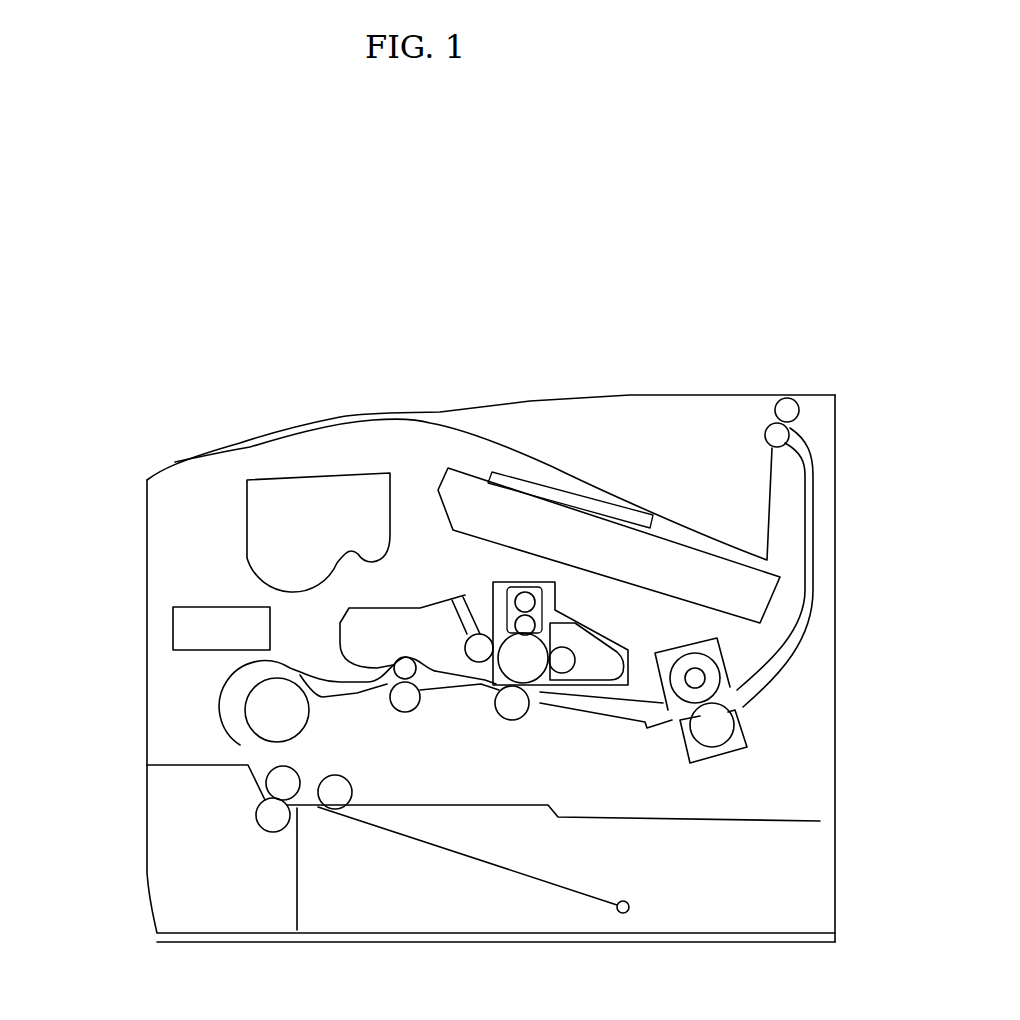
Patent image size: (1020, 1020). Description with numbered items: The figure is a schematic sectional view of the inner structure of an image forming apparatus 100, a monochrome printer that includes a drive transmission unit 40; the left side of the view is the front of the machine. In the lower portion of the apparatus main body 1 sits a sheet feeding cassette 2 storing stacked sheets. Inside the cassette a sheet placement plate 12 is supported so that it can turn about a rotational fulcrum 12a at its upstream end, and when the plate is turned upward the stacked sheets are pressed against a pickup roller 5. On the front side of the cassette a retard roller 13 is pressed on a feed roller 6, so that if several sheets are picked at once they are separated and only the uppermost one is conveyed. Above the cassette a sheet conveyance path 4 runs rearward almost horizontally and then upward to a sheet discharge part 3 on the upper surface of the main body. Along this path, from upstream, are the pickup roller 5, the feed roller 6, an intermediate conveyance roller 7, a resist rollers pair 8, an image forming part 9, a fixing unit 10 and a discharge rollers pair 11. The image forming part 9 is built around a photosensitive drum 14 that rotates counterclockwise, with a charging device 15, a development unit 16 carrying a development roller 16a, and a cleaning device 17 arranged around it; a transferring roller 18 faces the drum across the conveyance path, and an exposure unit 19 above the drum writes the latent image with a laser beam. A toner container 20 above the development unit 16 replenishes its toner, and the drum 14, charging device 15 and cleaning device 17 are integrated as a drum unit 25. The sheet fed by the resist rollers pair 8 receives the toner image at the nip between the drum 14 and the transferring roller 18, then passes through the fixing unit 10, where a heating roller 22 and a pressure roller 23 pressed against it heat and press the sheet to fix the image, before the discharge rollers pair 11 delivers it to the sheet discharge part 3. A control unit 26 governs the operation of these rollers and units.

The image forming apparatus 100 is at (286, 410).
The apparatus main body 1 is at (843, 442).
The sheet feeding cassette 2 is at (144, 857).
The sheet discharge part 3 is at (660, 510).
The sheet conveyance path 4 is at (807, 547).
The pickup roller 5 is at (335, 793).
The feed roller 6 is at (283, 783).
The intermediate conveyance roller 7 is at (273, 710).
The resist rollers pair 8 is at (386, 692).
The image forming part 9 is at (545, 714).
The fixing unit 10 is at (753, 724).
The discharge rollers pair 11 is at (767, 406).
The sheet placement plate 12 is at (493, 863).
The rotational fulcrum 12a is at (627, 912).
The retard roller 13 is at (273, 815).
The photosensitive drum 14 is at (522, 660).
The charging device 15 is at (503, 580).
The development unit 16 is at (425, 630).
The development roller 16a is at (480, 630).
The cleaning device 17 is at (607, 657).
The transferring roller 18 is at (512, 703).
The exposure unit 19 is at (560, 540).
The toner container 20 is at (293, 548).
The heating roller 22 is at (700, 675).
The pressure roller 23 is at (703, 723).
The drum unit 25 is at (553, 603).
The control unit 26 is at (173, 620).
The drive transmission unit 40 is at (540, 690).